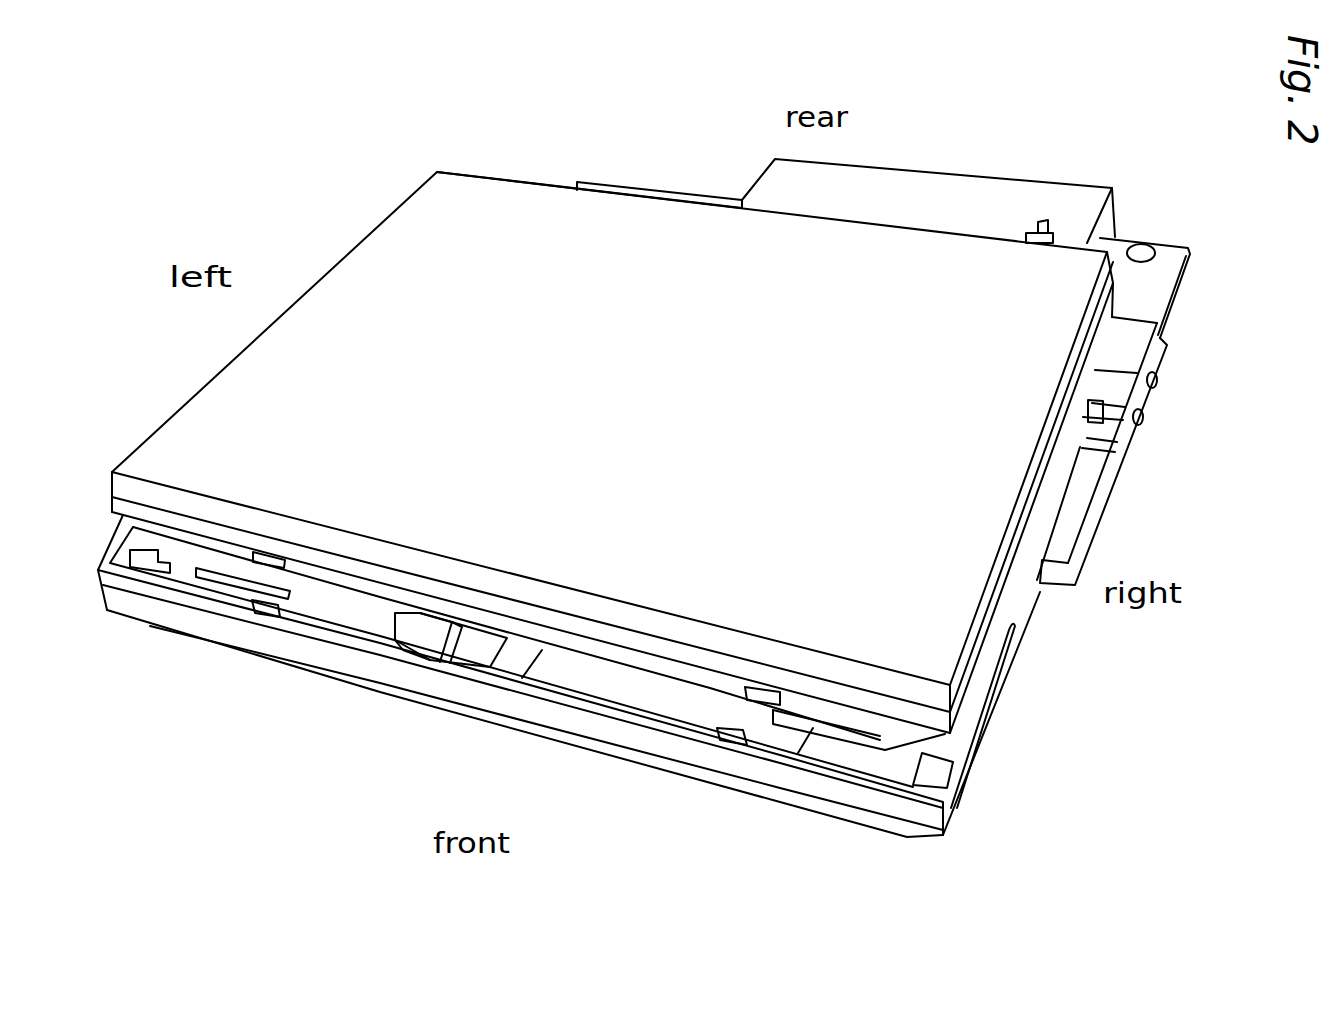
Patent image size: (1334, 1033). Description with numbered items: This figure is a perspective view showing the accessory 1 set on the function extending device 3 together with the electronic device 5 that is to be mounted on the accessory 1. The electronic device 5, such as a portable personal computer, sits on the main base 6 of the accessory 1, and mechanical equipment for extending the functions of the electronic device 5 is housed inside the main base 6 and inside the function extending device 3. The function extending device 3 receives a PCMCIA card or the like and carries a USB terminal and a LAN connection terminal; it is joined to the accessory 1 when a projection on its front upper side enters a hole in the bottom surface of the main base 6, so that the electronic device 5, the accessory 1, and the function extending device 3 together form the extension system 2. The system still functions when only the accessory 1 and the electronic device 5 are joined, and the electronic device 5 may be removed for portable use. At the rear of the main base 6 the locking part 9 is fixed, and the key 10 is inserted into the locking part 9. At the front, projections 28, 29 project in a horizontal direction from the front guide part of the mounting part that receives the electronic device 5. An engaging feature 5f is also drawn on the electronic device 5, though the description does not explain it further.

The accessory 1 is at (442, 716).
The extension system 2 is at (540, 172).
The function extending device 3 is at (770, 187).
The electronic device 5 is at (318, 312).
The engaging tab of lid 5f is at (758, 695).
The main base 6 is at (620, 735).
The locking part 9 is at (1052, 237).
The key 10 is at (1046, 222).
The projection 28 is at (265, 614).
The projection 29 is at (730, 742).